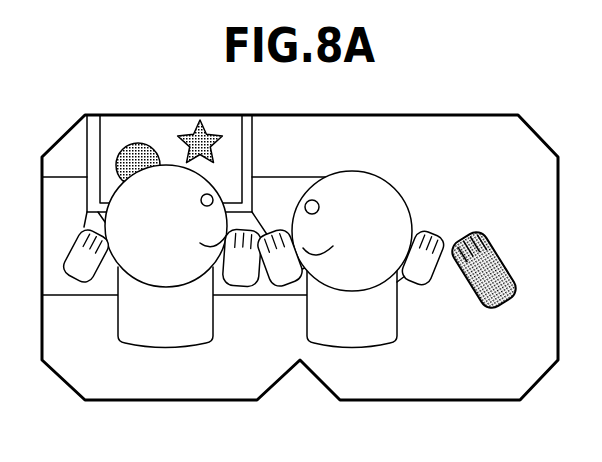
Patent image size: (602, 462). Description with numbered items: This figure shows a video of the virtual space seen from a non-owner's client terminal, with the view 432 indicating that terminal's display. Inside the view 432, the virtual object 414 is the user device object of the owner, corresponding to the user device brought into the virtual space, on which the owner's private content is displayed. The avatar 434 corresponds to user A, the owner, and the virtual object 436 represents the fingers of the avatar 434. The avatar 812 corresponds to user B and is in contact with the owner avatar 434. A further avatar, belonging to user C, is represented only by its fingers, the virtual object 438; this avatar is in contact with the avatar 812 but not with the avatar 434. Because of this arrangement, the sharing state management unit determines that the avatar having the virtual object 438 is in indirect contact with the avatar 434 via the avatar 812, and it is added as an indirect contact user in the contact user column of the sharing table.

The virtual object (user device object) 414 is at (232, 142).
The view 432 is at (120, 402).
The avatar 434 is at (160, 335).
The virtual object (fingers of avatar) 436 is at (242, 280).
The avatar 812 is at (354, 332).
The virtual object (fingers) 438 is at (485, 302).